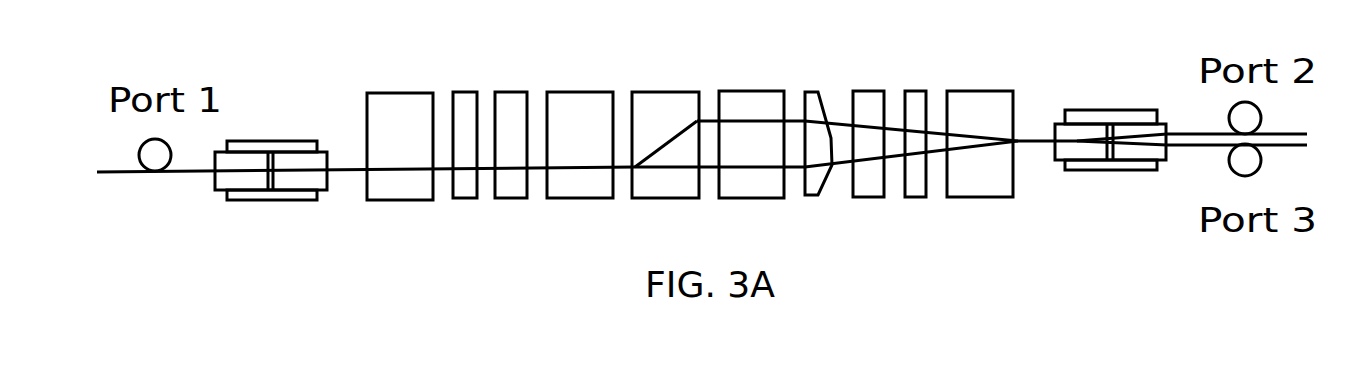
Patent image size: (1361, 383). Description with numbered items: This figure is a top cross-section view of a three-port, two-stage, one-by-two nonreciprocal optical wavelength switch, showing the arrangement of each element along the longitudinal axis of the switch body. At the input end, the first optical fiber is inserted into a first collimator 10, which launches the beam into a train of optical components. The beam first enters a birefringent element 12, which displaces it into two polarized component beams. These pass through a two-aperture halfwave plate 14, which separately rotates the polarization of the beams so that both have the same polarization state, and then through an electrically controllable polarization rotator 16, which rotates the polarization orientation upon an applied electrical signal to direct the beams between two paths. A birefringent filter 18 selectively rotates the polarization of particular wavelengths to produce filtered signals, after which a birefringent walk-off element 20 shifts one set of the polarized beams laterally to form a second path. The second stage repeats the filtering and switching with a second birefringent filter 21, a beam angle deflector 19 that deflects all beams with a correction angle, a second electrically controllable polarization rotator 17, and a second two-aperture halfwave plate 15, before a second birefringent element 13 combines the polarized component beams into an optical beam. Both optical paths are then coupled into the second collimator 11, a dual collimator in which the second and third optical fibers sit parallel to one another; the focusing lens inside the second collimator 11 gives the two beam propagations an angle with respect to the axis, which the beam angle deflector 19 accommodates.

The first collimator 10 is at (281, 137).
The second collimator 11 is at (1112, 108).
The birefringent element 12 is at (402, 87).
The birefringent element 13 is at (975, 85).
The two-aperture halfwave plate 14 is at (466, 85).
The two-aperture halfwave plate 15 is at (913, 85).
The electrically controllable polarization rotator 16 is at (514, 85).
The electrically controllable polarization rotator 17 is at (867, 85).
The birefringent filter 18 is at (582, 85).
The beam angle deflector 19 is at (810, 85).
The birefringent walk-off element 20 is at (663, 85).
The birefringent filter 21 is at (755, 85).